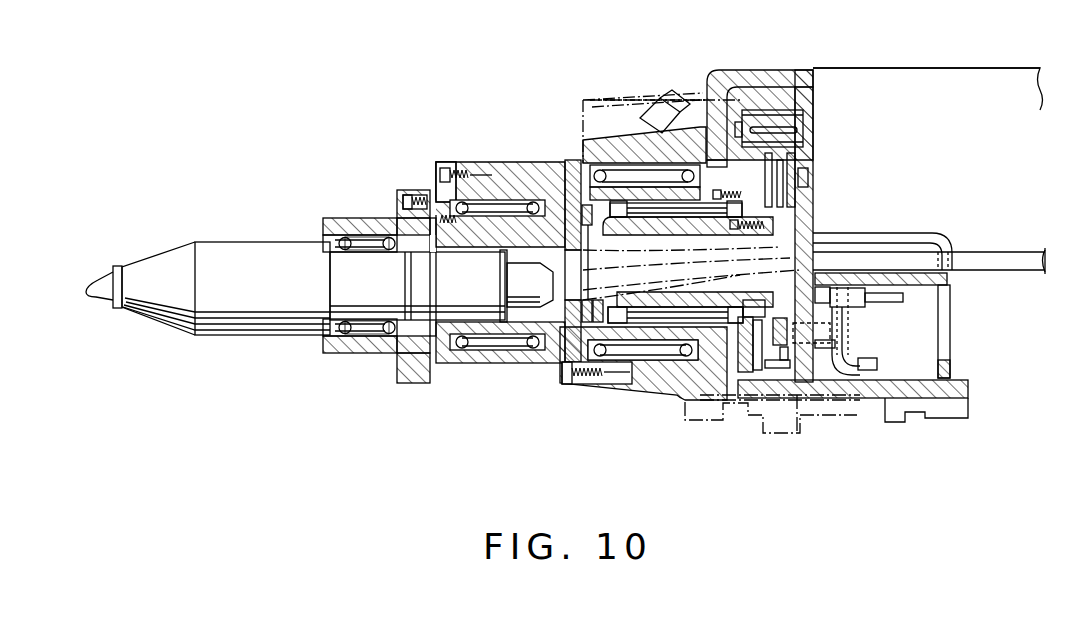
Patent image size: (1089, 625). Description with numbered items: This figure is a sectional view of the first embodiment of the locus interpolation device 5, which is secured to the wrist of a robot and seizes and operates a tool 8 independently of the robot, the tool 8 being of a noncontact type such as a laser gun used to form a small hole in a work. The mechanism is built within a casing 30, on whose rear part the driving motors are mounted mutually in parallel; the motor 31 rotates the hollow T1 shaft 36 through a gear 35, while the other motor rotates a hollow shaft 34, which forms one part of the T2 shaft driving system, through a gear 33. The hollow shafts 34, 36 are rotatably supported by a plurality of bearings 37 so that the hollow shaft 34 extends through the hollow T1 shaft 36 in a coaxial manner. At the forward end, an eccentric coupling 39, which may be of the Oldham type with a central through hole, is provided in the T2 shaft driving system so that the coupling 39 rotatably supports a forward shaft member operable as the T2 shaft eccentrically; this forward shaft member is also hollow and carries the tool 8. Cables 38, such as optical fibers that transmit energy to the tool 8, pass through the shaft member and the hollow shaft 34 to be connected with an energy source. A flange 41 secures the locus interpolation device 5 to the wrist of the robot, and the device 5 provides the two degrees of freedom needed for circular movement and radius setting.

The locus interpolation device 5 is at (592, 400).
The tool 8 is at (252, 243).
The casing 30 is at (666, 385).
The motor 31 is at (903, 83).
The gear 33 is at (781, 380).
The hollow shaft 34 is at (642, 231).
The gear 35 is at (750, 372).
The T1 shaft 36 is at (633, 336).
The bearings 37 is at (733, 292).
The cables 38 is at (1000, 262).
The eccentric coupling 39 is at (565, 318).
The flange 41 is at (962, 390).